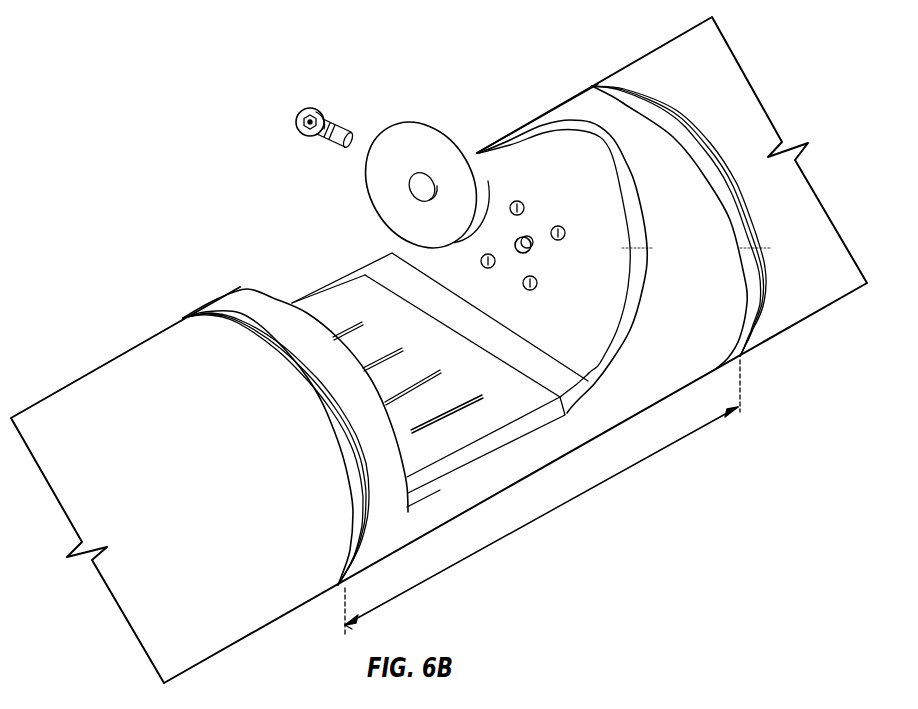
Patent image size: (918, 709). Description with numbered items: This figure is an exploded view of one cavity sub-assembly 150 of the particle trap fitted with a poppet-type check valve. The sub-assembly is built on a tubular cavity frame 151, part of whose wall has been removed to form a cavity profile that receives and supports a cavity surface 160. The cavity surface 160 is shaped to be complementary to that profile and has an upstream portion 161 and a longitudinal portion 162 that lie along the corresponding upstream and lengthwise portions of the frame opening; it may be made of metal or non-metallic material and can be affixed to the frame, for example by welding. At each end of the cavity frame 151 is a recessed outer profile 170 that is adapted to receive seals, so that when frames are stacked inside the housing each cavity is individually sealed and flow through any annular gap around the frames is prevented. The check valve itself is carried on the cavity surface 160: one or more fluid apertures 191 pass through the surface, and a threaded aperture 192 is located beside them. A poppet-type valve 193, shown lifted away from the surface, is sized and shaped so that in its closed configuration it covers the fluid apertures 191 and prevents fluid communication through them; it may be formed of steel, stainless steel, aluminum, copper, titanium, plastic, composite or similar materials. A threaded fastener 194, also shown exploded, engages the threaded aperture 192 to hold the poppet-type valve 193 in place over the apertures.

The tubular body 150 is at (542, 520).
The cavity frame 151 is at (573, 108).
The cavity surface 160 is at (337, 300).
The cavity surface upstream portion 161 is at (500, 160).
The cavity surface longitudinal portion 162 is at (305, 303).
The recessed outer profile 170 is at (182, 315).
The fluid apertures 191 is at (520, 203).
The threaded aperture 192 is at (531, 248).
The poppet-type valve 193 is at (432, 147).
The threaded fastener 194 is at (327, 112).